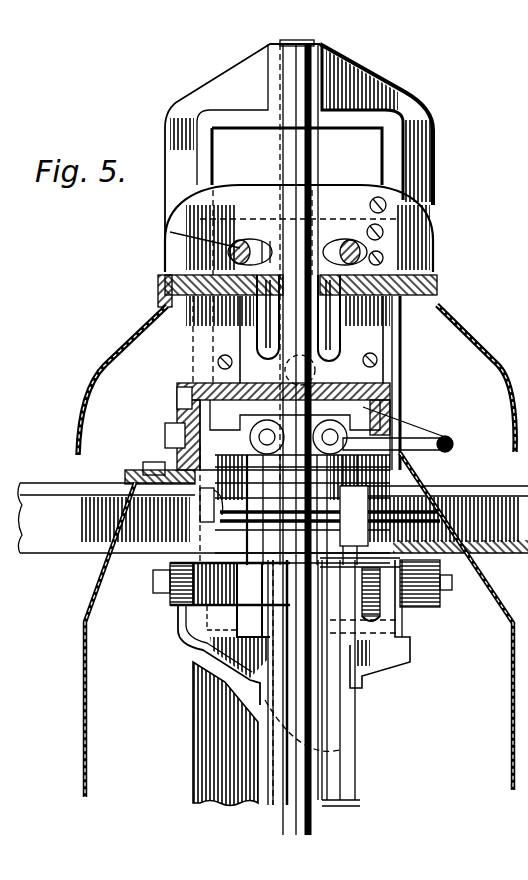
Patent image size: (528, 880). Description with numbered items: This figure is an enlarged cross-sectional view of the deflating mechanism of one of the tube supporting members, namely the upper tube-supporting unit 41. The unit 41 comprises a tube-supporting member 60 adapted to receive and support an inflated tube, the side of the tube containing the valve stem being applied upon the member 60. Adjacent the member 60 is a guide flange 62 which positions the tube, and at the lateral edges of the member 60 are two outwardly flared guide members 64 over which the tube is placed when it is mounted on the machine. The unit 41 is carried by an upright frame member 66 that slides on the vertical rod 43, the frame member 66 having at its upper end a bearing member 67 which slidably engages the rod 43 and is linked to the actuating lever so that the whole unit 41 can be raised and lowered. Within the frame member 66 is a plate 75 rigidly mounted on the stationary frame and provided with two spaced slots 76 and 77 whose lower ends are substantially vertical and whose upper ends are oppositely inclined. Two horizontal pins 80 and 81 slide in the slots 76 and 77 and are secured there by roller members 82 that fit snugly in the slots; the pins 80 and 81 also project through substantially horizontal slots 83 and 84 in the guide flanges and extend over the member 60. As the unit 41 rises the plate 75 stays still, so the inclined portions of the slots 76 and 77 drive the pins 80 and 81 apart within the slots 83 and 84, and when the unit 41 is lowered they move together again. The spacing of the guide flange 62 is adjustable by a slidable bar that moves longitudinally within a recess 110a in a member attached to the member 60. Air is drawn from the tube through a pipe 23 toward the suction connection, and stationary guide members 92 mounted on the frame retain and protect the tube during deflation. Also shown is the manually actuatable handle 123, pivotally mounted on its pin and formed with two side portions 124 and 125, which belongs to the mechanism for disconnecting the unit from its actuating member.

The pipe 23 is at (455, 444).
The tube-supporting unit 41 is at (400, 331).
The vertical rod 43 is at (308, 148).
The tube-supporting member 60 is at (158, 277).
The guide flange 62 is at (414, 228).
The outwardly flared guide member 64 is at (78, 401).
The upright frame member 66 is at (435, 128).
The bearing member 67 is at (326, 62).
The plate 75 is at (392, 386).
The slot 76 is at (252, 328).
The slot 77 is at (340, 340).
The pin 80 is at (243, 240).
The pin 81 is at (360, 240).
The roller member 82 is at (238, 252).
The horizontal slot 83 is at (270, 243).
The horizontal slot 84 is at (338, 240).
The stationary guide member 92 is at (126, 689).
The recess 110a is at (440, 283).
The handle 123 is at (311, 516).
The side portion 124 is at (170, 500).
The side portion 125 is at (273, 518).